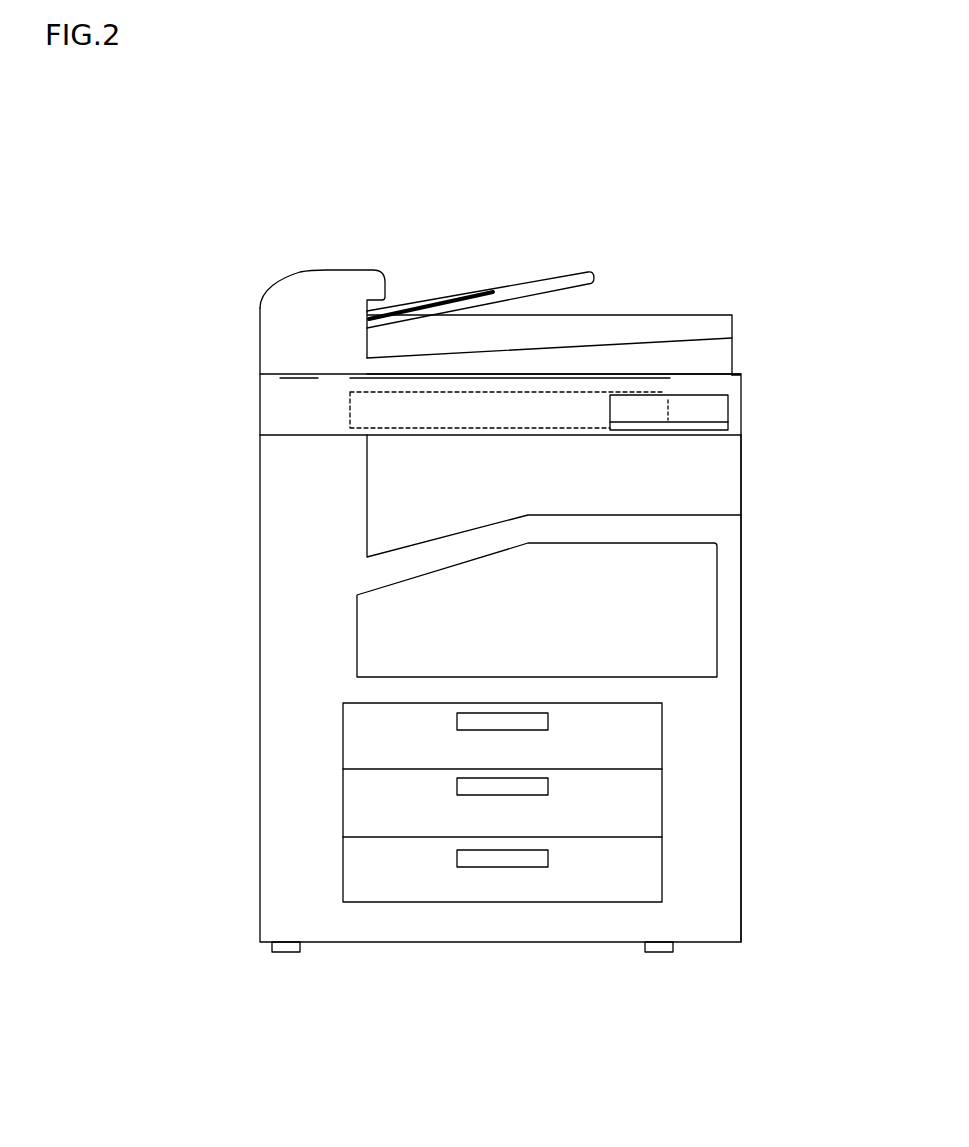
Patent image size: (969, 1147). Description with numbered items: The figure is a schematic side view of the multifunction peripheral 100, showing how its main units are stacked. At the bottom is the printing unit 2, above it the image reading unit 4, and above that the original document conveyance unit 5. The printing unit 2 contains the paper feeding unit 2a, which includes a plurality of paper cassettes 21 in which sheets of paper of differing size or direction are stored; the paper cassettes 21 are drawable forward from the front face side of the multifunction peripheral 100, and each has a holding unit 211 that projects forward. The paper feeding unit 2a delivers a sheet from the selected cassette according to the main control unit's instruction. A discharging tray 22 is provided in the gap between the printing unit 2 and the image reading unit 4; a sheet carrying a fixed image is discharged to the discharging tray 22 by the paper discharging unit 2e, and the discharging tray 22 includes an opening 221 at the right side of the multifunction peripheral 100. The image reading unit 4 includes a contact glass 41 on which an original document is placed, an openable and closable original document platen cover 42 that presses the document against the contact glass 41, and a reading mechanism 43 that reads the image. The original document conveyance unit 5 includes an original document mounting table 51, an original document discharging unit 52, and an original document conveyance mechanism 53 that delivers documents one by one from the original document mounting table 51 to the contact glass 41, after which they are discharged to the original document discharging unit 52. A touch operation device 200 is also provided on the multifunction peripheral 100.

The multifunction peripheral 100 is at (232, 213).
The printing unit 2 is at (750, 553).
The paper feeding unit 2a is at (692, 730).
The paper discharging unit 2e is at (357, 505).
The paper cassettes 21 is at (663, 868).
The holding unit 211 is at (366, 742).
The discharging tray 22 is at (405, 545).
The opening 221 is at (744, 473).
The image reading unit 4 is at (252, 393).
The contact glass 41 is at (458, 373).
The original document platen cover 42 is at (612, 358).
The reading mechanism 43 is at (350, 415).
The original document conveyance unit 5 is at (517, 258).
The original document mounting table 51 is at (570, 273).
The original document discharging unit 52 is at (680, 338).
The original document conveyance mechanism 53 is at (326, 272).
The touch operation device 200 is at (733, 405).